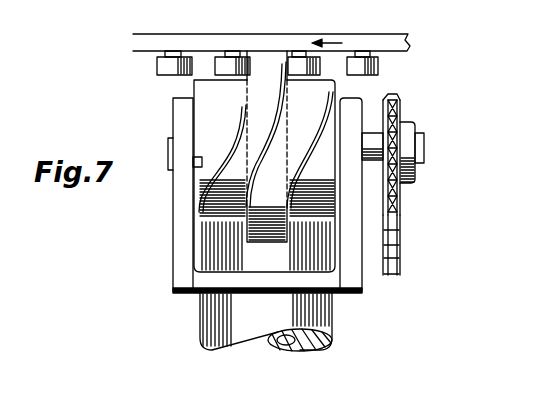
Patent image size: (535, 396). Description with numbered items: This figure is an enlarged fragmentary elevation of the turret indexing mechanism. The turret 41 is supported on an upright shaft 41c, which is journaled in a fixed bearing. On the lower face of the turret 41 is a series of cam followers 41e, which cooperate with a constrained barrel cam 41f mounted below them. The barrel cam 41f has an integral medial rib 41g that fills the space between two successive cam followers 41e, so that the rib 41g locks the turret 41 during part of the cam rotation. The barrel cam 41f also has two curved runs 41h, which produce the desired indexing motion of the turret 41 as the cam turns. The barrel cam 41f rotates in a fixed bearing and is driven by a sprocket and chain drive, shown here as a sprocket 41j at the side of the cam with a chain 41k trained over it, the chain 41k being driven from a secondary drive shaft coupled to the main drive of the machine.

The turret 41 is at (268, 41).
The cam followers 41e is at (185, 62).
The barrel cam 41f is at (188, 88).
The curved runs 41h is at (218, 177).
The medial rib 41g is at (268, 243).
The sprocket 41j is at (392, 100).
The chain 41k is at (395, 258).
The upright shaft 41c is at (261, 324).